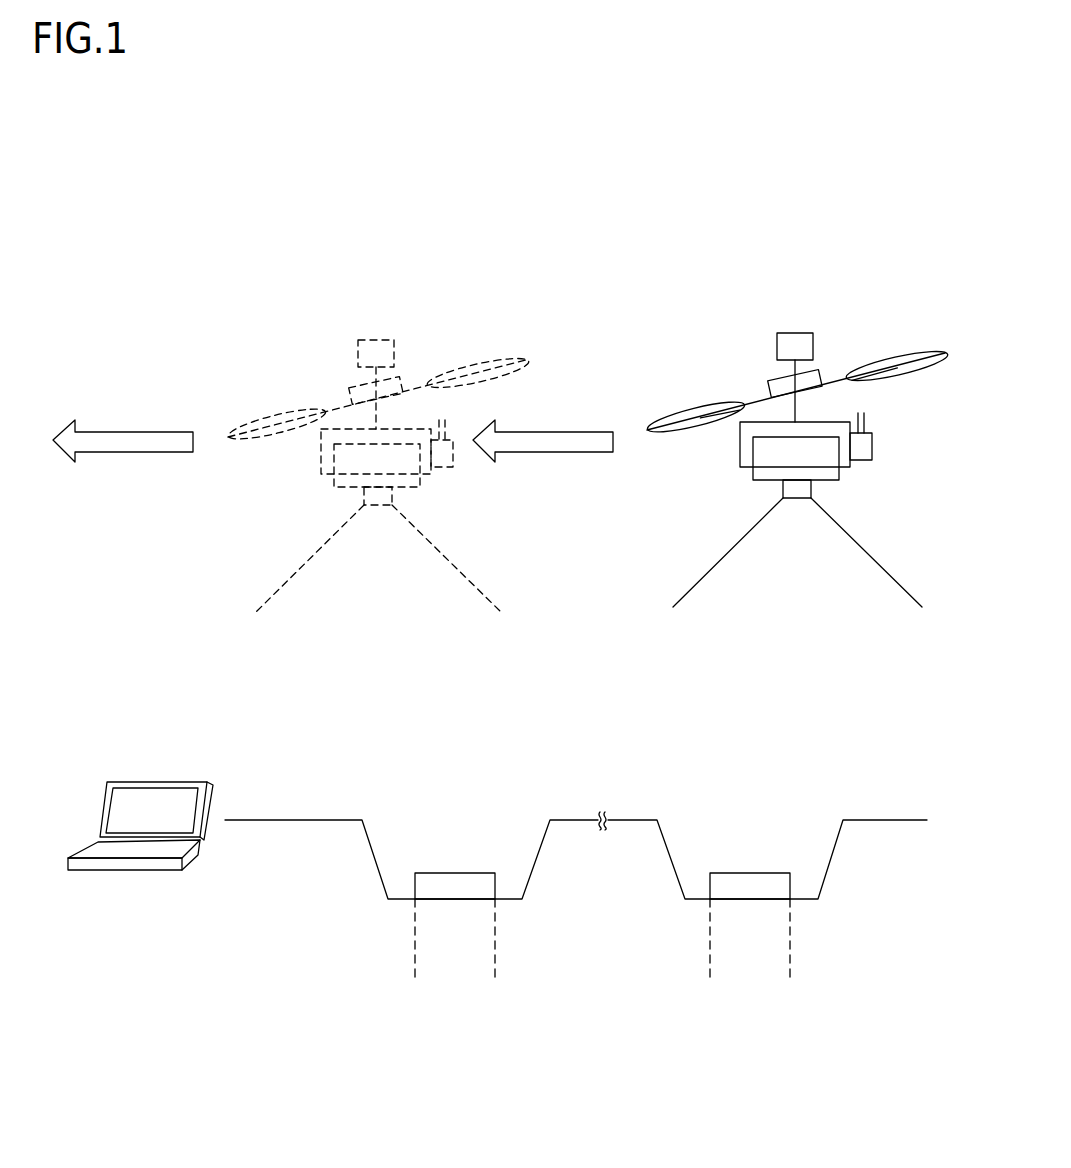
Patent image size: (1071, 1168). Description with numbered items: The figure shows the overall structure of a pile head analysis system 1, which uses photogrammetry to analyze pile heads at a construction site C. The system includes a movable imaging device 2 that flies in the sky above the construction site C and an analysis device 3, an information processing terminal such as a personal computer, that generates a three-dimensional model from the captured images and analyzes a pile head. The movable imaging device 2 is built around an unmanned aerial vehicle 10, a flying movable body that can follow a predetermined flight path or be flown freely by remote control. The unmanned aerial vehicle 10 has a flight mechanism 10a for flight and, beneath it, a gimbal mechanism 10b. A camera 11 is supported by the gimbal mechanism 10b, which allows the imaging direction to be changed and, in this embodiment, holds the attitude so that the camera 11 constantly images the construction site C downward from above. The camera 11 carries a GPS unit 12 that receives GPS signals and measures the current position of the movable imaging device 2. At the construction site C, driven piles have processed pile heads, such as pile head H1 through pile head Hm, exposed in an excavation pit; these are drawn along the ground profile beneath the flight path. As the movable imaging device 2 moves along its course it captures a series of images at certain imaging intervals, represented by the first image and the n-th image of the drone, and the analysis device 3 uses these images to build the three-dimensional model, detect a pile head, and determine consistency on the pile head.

The pile head analysis system 1 is at (551, 280).
The movable imaging device 2 is at (792, 305).
The analysis device 3 is at (160, 740).
The unmanned aerial vehicle 10 is at (832, 364).
The flight mechanism 10a is at (774, 382).
The gimbal mechanism 10b is at (740, 440).
The camera 11 is at (839, 478).
The GPS unit 12 is at (873, 445).
The construction site C is at (634, 797).
The pile head Hm is at (458, 872).
The pile head H1 is at (752, 872).